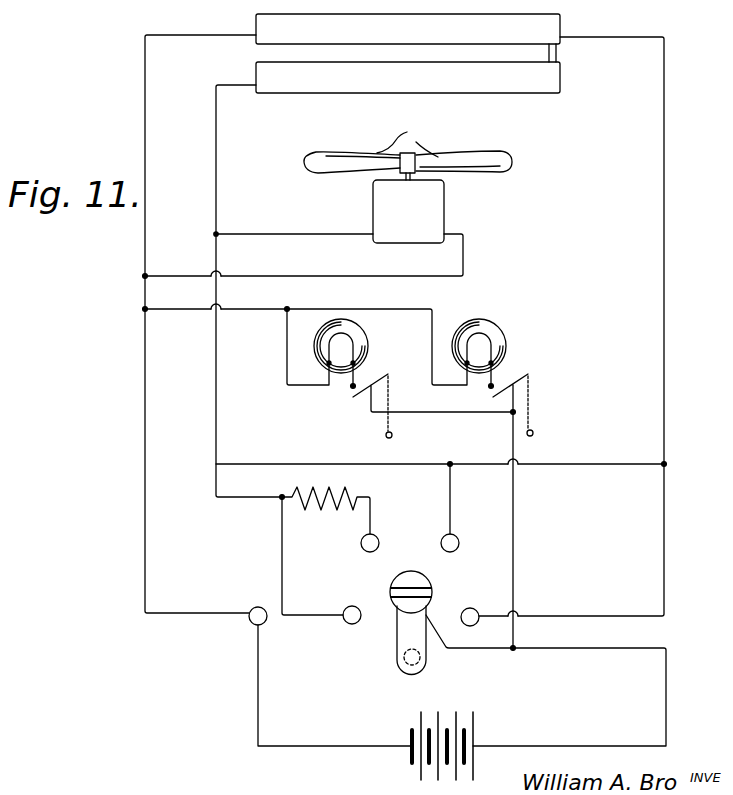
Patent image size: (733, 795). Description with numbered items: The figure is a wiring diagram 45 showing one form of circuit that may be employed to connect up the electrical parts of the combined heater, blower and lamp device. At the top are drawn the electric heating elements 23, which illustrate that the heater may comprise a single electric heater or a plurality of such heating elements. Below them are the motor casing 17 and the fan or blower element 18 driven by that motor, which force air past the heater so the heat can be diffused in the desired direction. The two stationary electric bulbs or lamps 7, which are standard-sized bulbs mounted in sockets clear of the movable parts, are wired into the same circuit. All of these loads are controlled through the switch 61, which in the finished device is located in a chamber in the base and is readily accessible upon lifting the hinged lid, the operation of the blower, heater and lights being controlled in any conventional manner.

The electric heating element 23 is at (408, 53).
The motor casing 17 is at (304, 224).
The fan or blower element 18 is at (395, 176).
The electric bulbs or lamps 7 is at (368, 343).
The wiring diagram 45 is at (592, 326).
The switch 61 is at (406, 634).